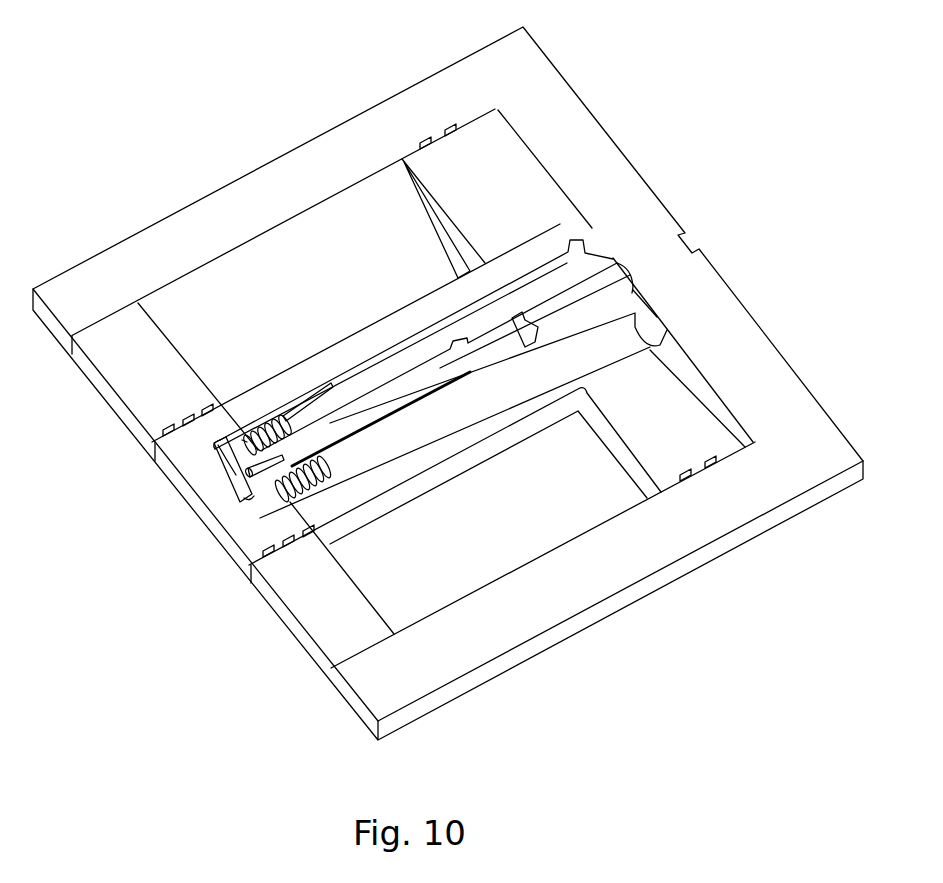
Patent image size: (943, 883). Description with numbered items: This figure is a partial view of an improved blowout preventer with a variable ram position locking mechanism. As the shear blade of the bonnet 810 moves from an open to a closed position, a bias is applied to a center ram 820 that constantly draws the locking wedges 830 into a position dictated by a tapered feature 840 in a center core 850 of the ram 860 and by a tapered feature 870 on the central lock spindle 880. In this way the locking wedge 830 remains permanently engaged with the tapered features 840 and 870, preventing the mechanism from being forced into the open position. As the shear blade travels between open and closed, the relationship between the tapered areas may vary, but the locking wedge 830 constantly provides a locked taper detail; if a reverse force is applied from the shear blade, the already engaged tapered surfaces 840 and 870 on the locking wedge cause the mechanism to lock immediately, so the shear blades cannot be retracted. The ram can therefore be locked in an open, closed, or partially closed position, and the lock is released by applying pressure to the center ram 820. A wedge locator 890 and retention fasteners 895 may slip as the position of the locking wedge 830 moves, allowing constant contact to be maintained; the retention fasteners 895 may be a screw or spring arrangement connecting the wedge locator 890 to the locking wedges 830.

The bonnet 810 is at (575, 572).
The center ram 820 is at (490, 333).
The locking wedges 830 is at (300, 410).
The tapered feature 840 is at (305, 420).
The center core 850 is at (405, 317).
The ram 860 is at (485, 195).
The tapered feature 870 is at (257, 418).
The central lock spindle 880 is at (433, 353).
The wedge locator 890 is at (263, 485).
The retention fasteners 895 is at (262, 447).